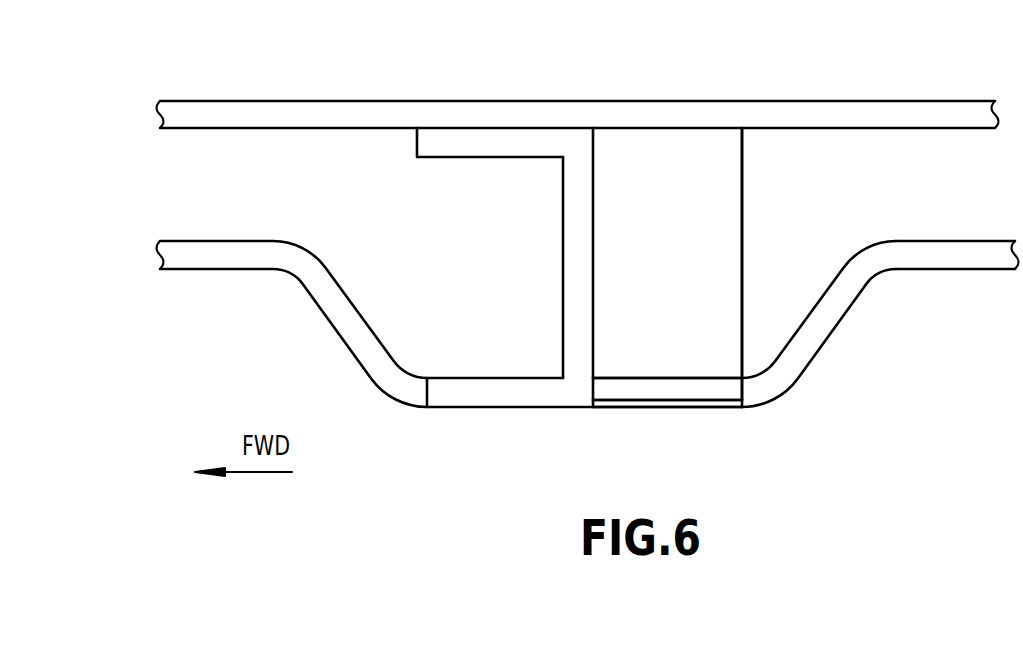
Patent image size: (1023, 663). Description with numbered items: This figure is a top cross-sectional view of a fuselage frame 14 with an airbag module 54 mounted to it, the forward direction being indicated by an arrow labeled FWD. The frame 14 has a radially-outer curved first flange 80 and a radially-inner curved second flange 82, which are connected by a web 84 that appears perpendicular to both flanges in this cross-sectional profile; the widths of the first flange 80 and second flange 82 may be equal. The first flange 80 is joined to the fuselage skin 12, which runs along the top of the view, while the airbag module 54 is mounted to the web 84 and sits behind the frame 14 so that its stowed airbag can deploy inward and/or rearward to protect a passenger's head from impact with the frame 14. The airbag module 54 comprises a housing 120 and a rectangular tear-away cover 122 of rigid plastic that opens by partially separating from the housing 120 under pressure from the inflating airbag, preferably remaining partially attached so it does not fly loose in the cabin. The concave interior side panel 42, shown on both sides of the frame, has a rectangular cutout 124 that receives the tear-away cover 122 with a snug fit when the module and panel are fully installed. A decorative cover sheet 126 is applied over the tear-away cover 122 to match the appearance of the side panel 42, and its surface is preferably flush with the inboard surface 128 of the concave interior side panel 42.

The fuselage skin 12 is at (313, 101).
The frame 14 is at (579, 254).
The concave interior side panel 42 is at (225, 253).
The airbag module 54 is at (757, 203).
The first flange 80 is at (488, 140).
The second flange 82 is at (488, 400).
The web 84 is at (575, 207).
The housing 120 is at (720, 260).
The tear-away cover 122 is at (637, 373).
The rectangular cutout 124 is at (738, 396).
The decorative cover sheet 126 is at (690, 407).
The inboard surface 128 is at (835, 322).